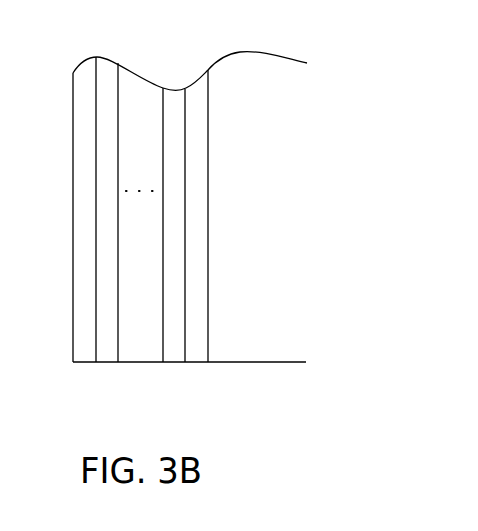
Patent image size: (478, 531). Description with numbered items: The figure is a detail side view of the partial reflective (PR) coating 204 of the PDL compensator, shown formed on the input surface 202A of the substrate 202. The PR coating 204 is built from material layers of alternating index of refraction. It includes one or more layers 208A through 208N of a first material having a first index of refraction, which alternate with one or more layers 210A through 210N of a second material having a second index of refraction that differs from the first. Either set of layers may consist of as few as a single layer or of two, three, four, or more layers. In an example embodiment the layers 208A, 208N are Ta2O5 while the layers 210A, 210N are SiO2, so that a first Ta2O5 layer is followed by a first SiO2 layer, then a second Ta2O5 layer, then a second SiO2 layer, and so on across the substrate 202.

The substrate 202 is at (264, 200).
The input surface 202A is at (209, 113).
The PR coating 204 is at (210, 48).
The first layer of first material 208A is at (84, 362).
The Nth layer of first material 208N is at (175, 362).
The first layer of second material 210A is at (110, 362).
The Nth layer of second material 210N is at (197, 362).